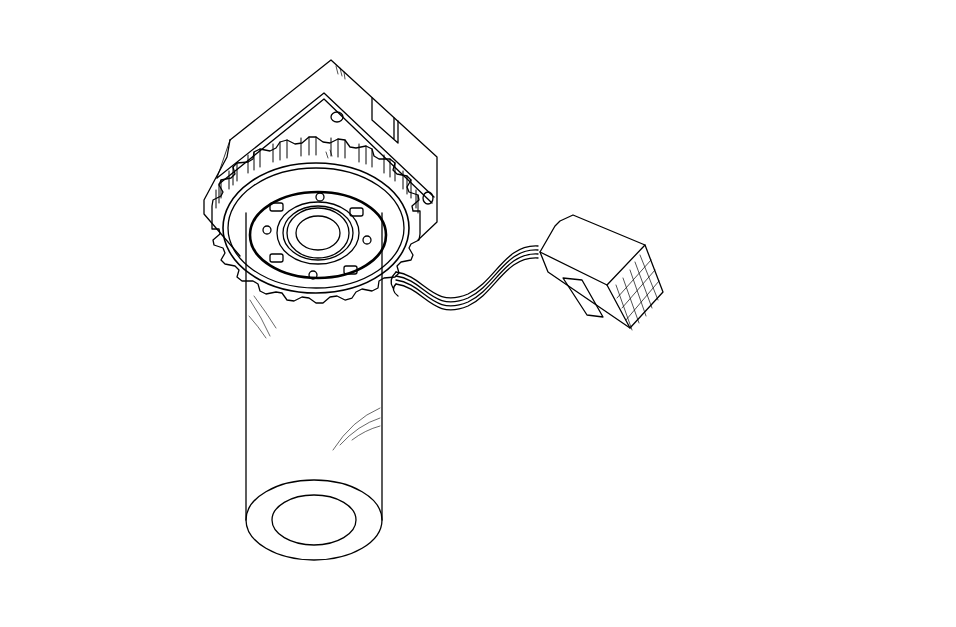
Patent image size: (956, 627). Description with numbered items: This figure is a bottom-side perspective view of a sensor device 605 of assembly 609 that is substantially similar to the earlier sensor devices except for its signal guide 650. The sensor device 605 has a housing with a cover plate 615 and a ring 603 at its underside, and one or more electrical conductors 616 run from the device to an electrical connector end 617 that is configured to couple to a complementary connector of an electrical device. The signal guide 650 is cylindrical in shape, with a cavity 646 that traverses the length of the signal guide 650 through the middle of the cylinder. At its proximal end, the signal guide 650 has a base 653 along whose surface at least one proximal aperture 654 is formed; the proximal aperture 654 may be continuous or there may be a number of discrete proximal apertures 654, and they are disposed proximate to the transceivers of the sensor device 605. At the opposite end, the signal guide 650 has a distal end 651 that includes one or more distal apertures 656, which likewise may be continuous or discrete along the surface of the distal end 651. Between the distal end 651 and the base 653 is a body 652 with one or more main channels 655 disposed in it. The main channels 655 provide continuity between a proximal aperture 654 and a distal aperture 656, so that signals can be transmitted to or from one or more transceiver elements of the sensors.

The imaging assembly 609 is at (550, 75).
The sensor device 605 is at (274, 92).
The housing cover plate 615 is at (360, 80).
The lens ring 603 is at (230, 167).
The proximal aperture 654 is at (255, 233).
The base 653 is at (227, 293).
The body 652 is at (207, 408).
The main channel 655 is at (382, 380).
The distal end 651 is at (242, 518).
The signal guide 650 is at (127, 515).
The distal aperture 656 is at (258, 530).
The cavity 646 is at (330, 525).
The electrical conductor 616 is at (503, 253).
The electrical connector end 617 is at (605, 233).